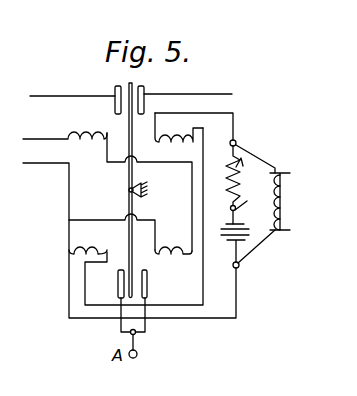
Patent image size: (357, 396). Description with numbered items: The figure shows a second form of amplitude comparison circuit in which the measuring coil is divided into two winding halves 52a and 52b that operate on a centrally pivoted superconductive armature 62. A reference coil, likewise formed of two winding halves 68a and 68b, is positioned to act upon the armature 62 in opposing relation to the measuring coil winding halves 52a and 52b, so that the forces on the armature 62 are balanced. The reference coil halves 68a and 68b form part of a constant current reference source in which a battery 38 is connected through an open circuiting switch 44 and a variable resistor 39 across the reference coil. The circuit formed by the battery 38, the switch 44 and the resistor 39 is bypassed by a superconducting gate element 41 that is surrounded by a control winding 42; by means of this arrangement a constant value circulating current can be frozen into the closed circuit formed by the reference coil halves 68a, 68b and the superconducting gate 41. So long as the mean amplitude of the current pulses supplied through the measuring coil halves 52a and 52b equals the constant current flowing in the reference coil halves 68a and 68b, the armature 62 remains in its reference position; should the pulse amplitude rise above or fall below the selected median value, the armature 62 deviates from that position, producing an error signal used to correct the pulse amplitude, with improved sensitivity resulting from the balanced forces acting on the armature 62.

The superconductive armature 62 is at (128, 82).
The measuring coil winding half 52a is at (88, 128).
The measuring coil winding half 52b is at (174, 233).
The reference coil winding half 68a is at (151, 140).
The reference coil winding half 68b is at (97, 238).
The superconducting gate element 41 is at (271, 162).
The variable resistor 39 is at (242, 189).
The control winding 42 is at (284, 174).
The open circuiting switch 44 is at (230, 209).
The battery 38 is at (233, 242).